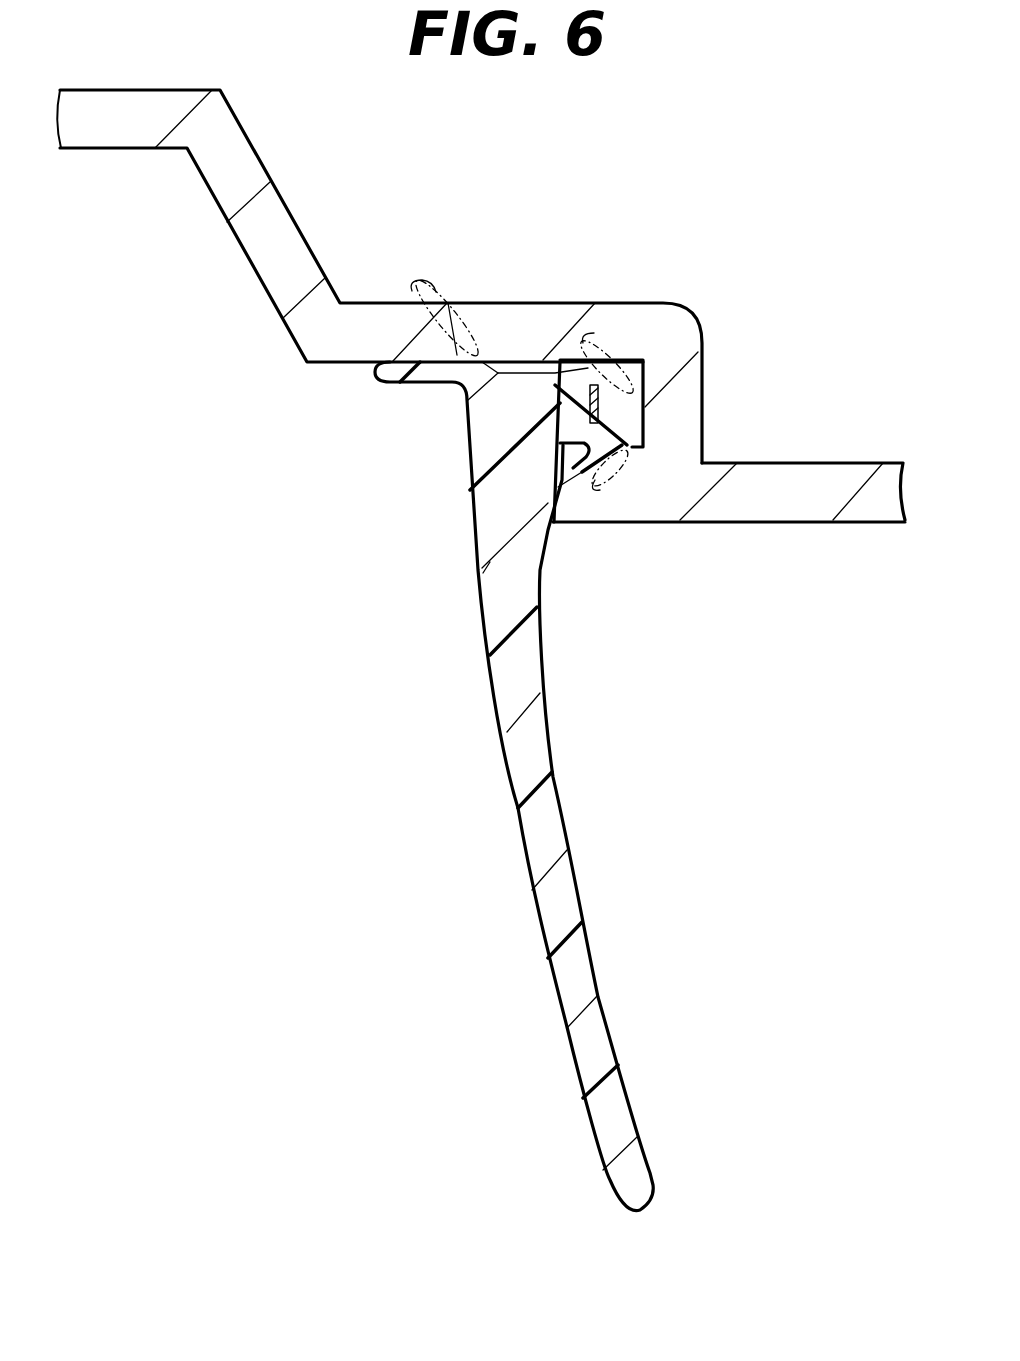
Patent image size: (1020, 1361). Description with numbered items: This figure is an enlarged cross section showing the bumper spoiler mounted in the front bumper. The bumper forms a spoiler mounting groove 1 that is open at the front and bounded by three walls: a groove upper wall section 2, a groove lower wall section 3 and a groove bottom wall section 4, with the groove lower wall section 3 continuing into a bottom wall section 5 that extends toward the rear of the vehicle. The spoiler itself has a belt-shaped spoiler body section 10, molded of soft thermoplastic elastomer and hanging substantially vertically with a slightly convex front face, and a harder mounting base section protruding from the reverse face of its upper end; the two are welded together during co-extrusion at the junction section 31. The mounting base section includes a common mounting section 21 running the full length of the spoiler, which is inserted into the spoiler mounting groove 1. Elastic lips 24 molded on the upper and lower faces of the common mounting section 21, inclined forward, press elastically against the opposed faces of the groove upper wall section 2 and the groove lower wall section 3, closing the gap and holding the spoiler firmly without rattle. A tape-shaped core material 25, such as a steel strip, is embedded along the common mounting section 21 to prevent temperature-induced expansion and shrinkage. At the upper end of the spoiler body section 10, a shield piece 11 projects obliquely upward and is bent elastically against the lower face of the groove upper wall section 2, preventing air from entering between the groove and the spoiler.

The spoiler mounting groove 1 is at (518, 358).
The groove upper wall section 2 is at (394, 300).
The groove lower wall section 3 is at (622, 523).
The groove bottom wall section 4 is at (685, 420).
The bottom wall section 5 is at (795, 512).
The spoiler body section 10 is at (550, 913).
The shield piece 11 is at (447, 377).
The common mounting section 21 is at (645, 450).
The elastic lips 24 is at (562, 360).
The core material 25 is at (599, 380).
The junction section 31 is at (558, 428).